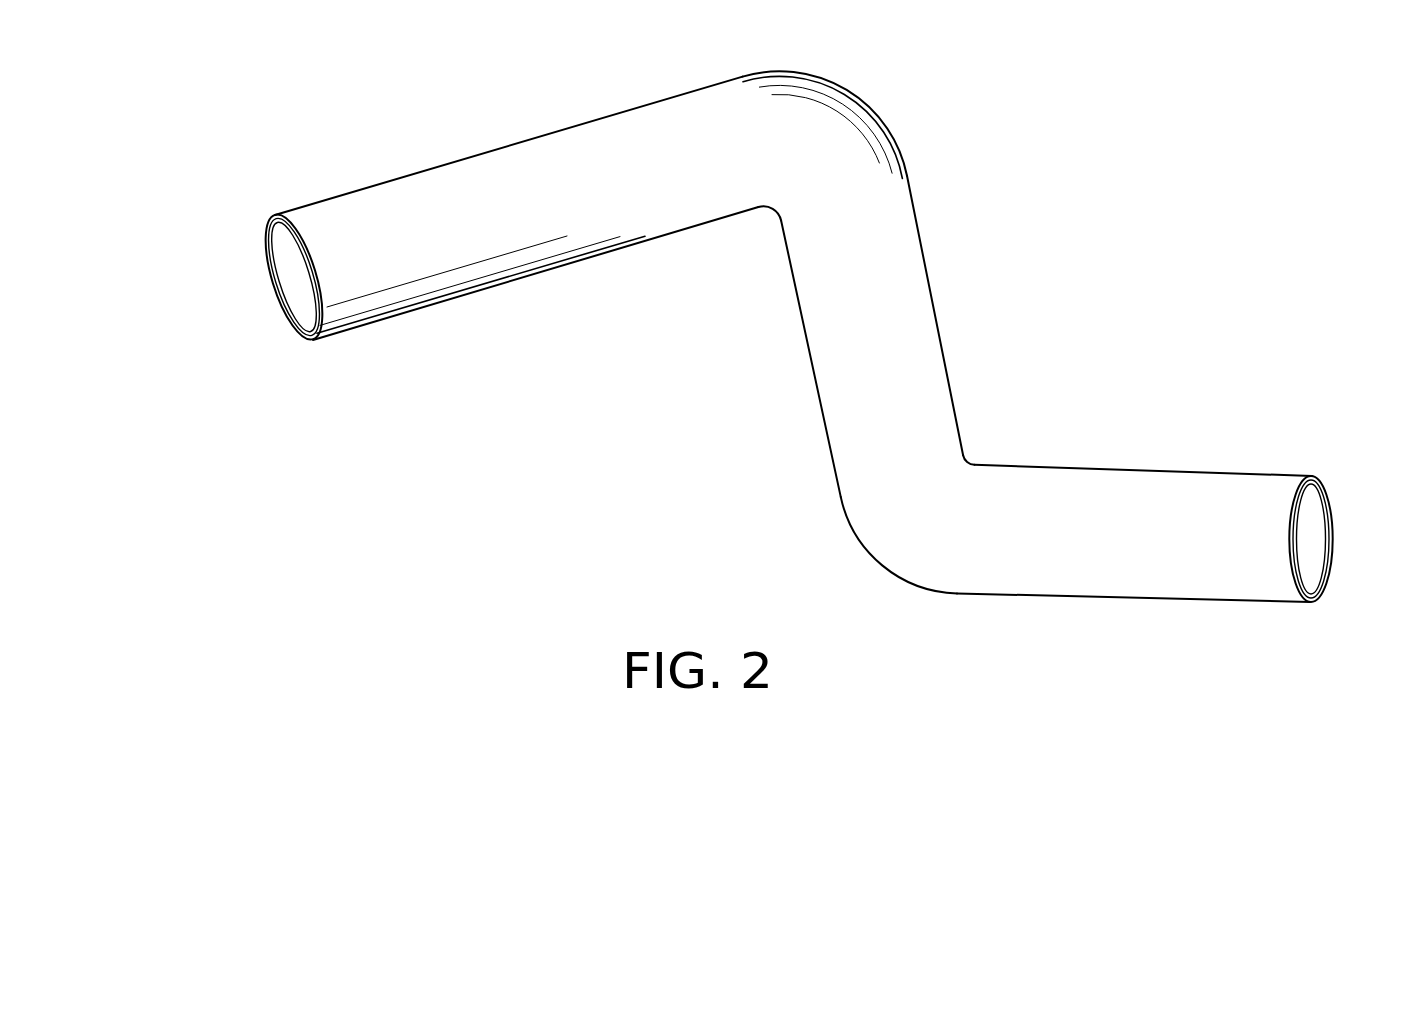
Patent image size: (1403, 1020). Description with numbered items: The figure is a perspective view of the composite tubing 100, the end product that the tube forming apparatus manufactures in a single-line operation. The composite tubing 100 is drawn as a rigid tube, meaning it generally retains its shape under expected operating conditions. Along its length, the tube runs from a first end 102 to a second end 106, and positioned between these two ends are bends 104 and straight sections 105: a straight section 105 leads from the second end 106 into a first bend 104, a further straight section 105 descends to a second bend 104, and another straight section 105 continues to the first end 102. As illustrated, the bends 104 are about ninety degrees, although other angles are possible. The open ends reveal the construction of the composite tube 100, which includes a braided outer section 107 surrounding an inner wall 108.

The composite tubing 100 is at (415, 110).
The first end 102 is at (1273, 470).
The bends 104 is at (852, 147).
The straight sections 105 is at (907, 317).
The second end 106 is at (313, 340).
The braided outer section 107 is at (324, 308).
The inner wall 108 is at (270, 223).